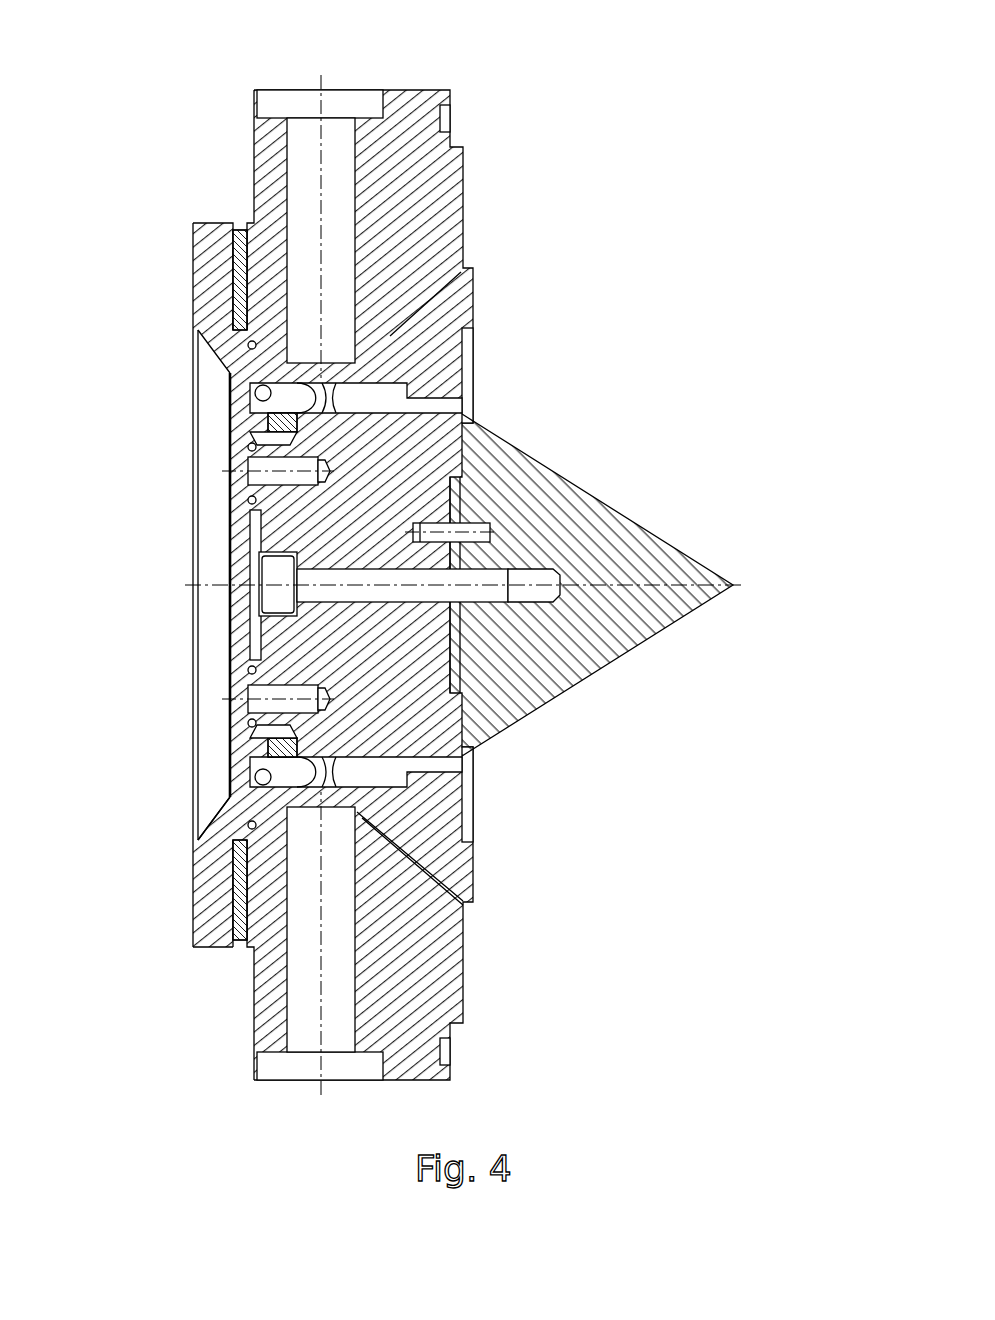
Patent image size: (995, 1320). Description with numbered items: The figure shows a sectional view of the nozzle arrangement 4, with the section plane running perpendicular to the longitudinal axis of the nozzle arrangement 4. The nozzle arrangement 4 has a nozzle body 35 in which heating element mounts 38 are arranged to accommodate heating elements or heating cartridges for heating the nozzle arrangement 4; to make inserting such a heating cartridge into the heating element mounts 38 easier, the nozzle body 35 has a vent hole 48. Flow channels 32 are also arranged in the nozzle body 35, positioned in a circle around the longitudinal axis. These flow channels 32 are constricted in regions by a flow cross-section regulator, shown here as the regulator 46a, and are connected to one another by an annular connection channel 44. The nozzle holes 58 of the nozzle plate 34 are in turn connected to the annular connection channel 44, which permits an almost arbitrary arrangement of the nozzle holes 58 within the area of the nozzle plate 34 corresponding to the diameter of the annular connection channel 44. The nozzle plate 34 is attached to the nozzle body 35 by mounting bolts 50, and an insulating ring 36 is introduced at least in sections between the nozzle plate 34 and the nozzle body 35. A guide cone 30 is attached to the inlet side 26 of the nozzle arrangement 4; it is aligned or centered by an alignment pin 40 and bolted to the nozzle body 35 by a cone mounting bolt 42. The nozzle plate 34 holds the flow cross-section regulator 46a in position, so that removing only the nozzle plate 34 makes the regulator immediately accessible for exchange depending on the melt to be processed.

The nozzle arrangement 4 is at (128, 86).
The inlet side 26 is at (731, 514).
The guide cone 30 is at (633, 548).
The flow channels 32 is at (437, 403).
The nozzle plate 34 is at (203, 910).
The nozzle body 35 is at (410, 185).
The insulating ring 36 is at (240, 265).
The heating element mounts 38 is at (339, 150).
The alignment pin 40 is at (467, 525).
The cone mounting bolt 42 is at (545, 575).
The annular connection channel 44 is at (256, 392).
The spring 46a is at (267, 420).
The vent hole 48 is at (460, 266).
The mounting bolts 50 is at (240, 493).
The nozzle holes 58 is at (214, 396).